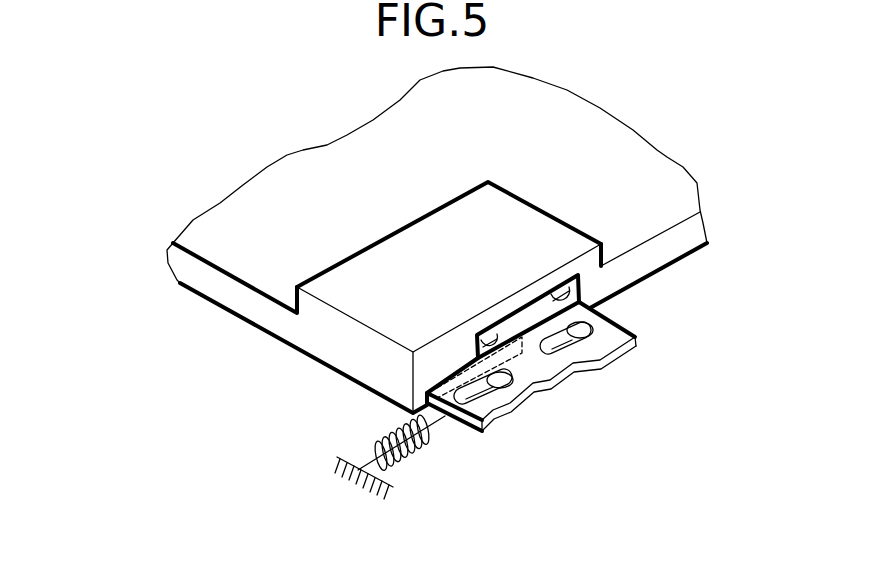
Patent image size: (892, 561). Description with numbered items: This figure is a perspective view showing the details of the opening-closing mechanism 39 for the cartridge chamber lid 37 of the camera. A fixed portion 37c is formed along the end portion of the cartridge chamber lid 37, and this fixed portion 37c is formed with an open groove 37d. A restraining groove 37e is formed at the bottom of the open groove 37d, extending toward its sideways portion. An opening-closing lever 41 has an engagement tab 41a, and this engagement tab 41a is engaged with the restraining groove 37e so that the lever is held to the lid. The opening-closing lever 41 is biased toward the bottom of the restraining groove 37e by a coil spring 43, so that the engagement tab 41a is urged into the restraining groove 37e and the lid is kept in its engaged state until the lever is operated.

The cartridge chamber lid 37 is at (437, 240).
The fixed portion 37c is at (343, 297).
The open groove 37d is at (570, 278).
The restraining groove 37e is at (476, 333).
The opening-closing mechanism 39 is at (531, 372).
The opening-closing lever 41 is at (542, 372).
The engagement tab 41a is at (503, 318).
The coil spring 43 is at (416, 457).